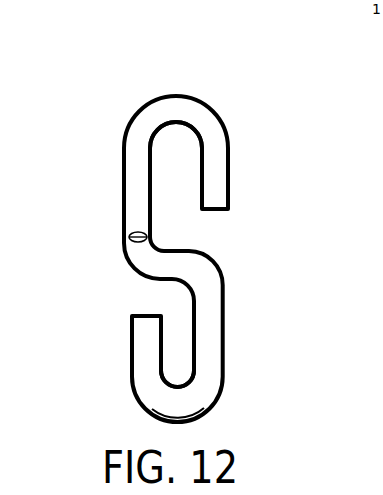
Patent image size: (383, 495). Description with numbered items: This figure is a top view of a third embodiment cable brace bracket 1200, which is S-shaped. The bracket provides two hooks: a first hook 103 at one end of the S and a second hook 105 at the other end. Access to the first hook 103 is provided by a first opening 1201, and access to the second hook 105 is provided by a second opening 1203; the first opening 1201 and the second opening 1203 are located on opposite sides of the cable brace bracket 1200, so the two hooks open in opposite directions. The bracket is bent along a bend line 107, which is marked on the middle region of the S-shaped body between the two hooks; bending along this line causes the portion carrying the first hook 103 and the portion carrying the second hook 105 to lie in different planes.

The cable brace bracket 1200 is at (134, 60).
The first opening 1201 is at (288, 224).
The second opening 1203 is at (95, 267).
The bend line 107 is at (130, 236).
The first hook 103 is at (188, 226).
The second hook 105 is at (173, 316).